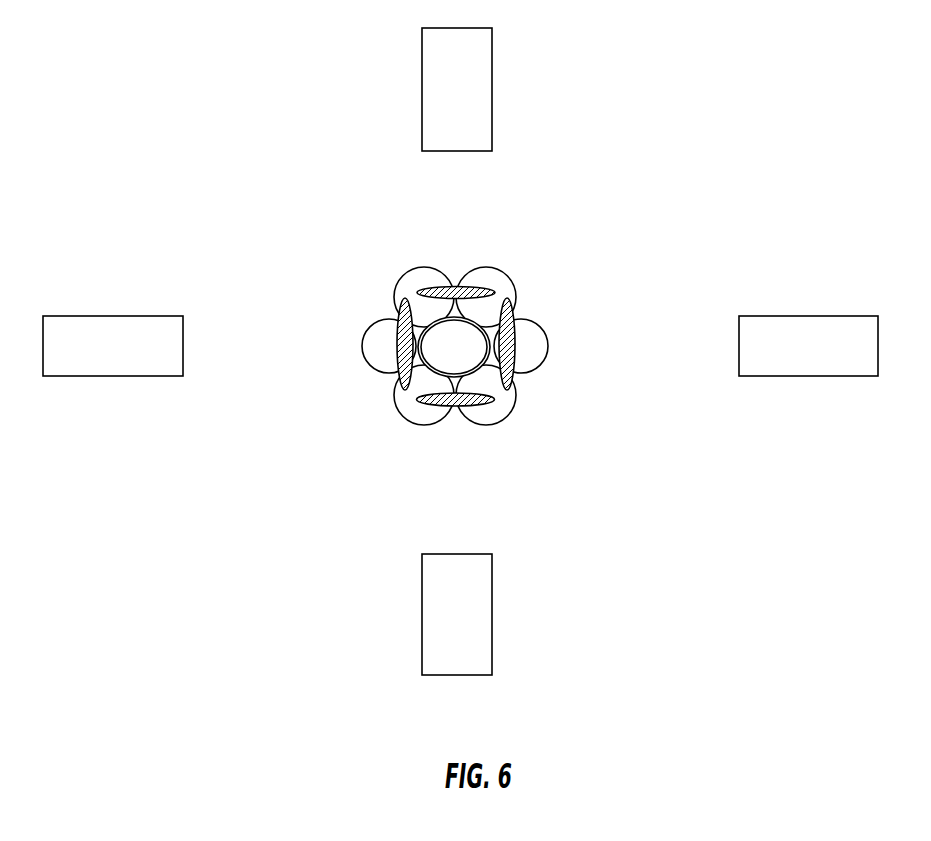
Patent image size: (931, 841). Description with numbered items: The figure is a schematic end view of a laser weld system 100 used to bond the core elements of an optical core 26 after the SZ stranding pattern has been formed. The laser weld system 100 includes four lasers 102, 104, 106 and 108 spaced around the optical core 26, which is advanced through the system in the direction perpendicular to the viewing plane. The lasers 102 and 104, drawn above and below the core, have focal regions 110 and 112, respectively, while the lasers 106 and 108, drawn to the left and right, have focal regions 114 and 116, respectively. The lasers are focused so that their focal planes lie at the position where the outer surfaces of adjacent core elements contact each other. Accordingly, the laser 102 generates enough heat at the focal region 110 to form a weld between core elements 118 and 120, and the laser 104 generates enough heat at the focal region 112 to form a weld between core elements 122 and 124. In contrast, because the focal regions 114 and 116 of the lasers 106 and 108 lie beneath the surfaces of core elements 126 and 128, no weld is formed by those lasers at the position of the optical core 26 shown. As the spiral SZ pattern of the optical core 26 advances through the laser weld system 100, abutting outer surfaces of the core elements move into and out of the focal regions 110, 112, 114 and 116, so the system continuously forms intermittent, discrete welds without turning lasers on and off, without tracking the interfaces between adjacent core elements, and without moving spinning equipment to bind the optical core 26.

The laser weld system 100 is at (669, 165).
The laser 102 is at (480, 124).
The laser 104 is at (480, 631).
The laser 106 is at (119, 367).
The laser 108 is at (777, 320).
The optical core 26 is at (547, 385).
The focal region 110 is at (454, 290).
The focal region 112 is at (457, 402).
The focal region 114 is at (403, 300).
The focal region 116 is at (513, 338).
The core element 118 is at (408, 278).
The core element 120 is at (502, 282).
The core element 122 is at (488, 415).
The core element 124 is at (418, 415).
The core element 126 is at (373, 355).
The core element 128 is at (535, 347).